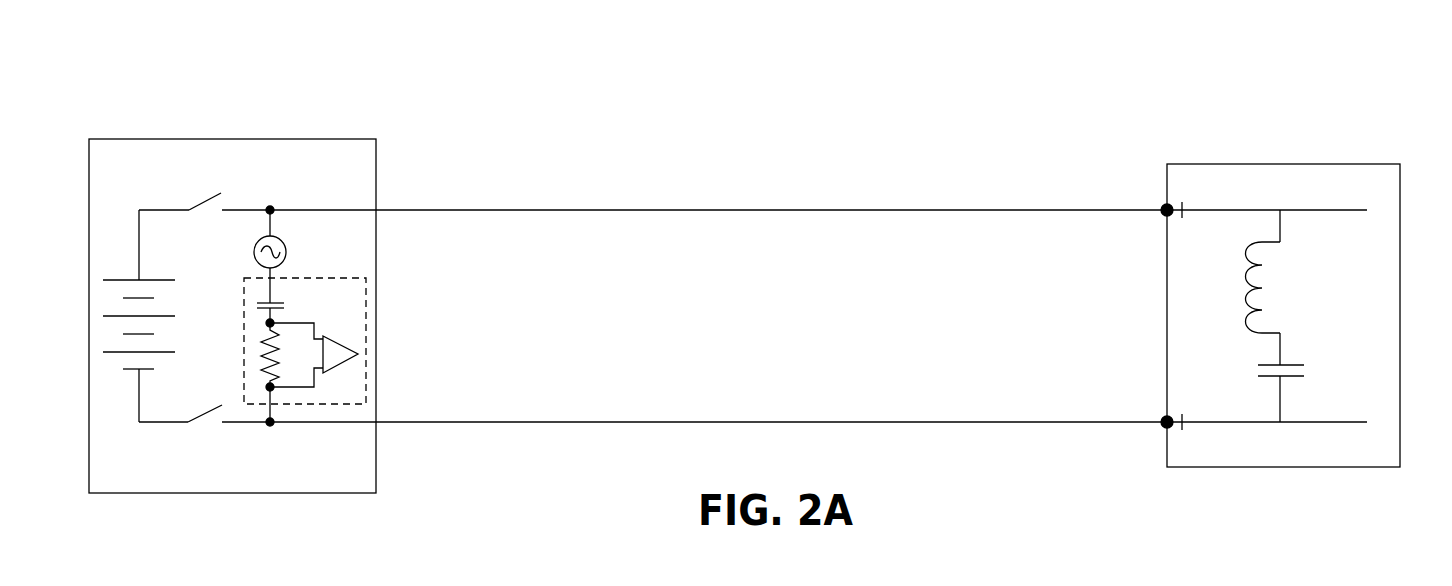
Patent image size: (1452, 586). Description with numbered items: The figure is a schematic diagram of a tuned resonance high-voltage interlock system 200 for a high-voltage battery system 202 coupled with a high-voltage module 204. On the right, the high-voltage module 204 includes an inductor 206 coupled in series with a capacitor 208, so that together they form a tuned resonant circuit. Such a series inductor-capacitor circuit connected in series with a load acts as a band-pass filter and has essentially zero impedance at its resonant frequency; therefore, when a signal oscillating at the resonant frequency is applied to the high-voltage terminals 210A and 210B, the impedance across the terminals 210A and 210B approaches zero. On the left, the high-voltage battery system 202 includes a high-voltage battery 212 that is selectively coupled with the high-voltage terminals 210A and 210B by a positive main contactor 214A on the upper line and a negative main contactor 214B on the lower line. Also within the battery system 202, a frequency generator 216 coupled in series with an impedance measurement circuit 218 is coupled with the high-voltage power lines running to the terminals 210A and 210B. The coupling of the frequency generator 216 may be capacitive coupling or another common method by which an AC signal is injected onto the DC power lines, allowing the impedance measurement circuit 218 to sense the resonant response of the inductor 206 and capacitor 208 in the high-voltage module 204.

The tuned resonance high-voltage interlock system 200 is at (1023, 82).
The high-voltage battery system 202 is at (310, 139).
The high-voltage module 204 is at (1325, 164).
The inductor 206 is at (1247, 252).
The capacitor 208 is at (1292, 378).
The high-voltage terminal 210A is at (1167, 210).
The high-voltage terminal 210B is at (1167, 422).
The high-voltage battery 212 is at (103, 280).
The positive main contactor 214A is at (202, 195).
The negative main contactor 214B is at (207, 415).
The frequency generator 216 is at (287, 252).
The impedance measurement circuit 218 is at (364, 353).